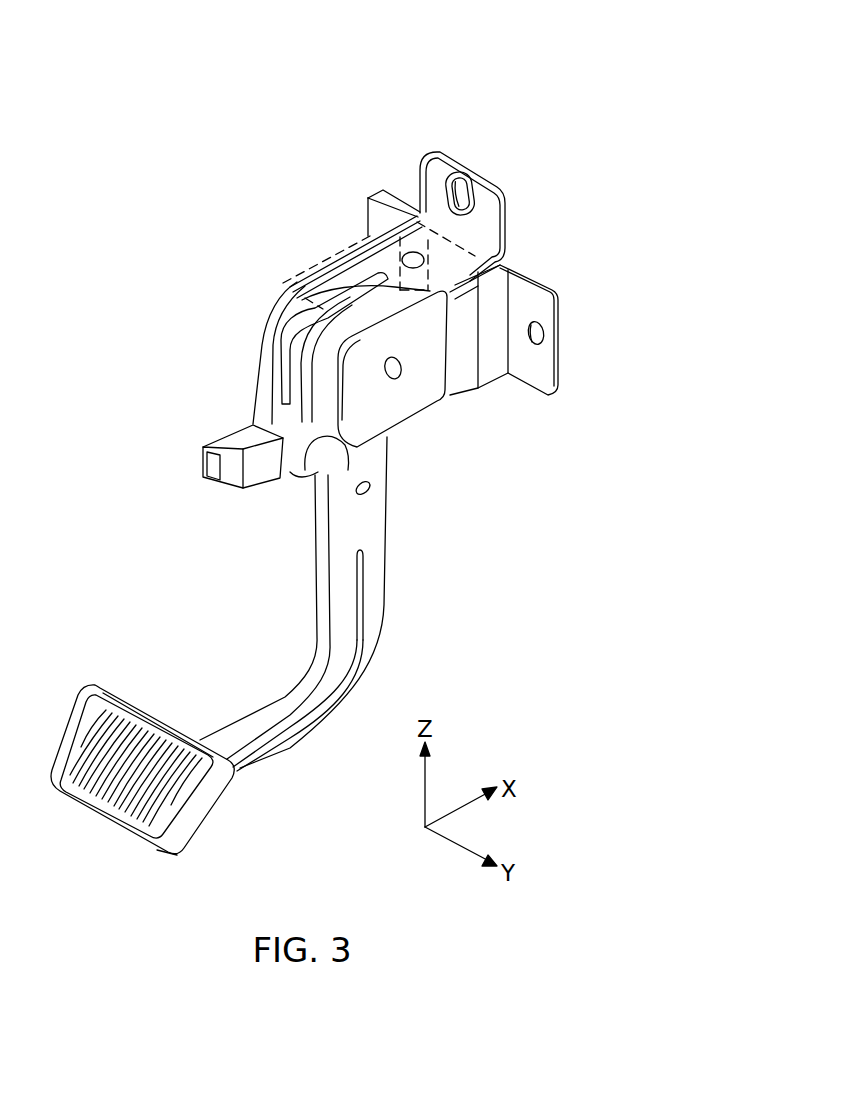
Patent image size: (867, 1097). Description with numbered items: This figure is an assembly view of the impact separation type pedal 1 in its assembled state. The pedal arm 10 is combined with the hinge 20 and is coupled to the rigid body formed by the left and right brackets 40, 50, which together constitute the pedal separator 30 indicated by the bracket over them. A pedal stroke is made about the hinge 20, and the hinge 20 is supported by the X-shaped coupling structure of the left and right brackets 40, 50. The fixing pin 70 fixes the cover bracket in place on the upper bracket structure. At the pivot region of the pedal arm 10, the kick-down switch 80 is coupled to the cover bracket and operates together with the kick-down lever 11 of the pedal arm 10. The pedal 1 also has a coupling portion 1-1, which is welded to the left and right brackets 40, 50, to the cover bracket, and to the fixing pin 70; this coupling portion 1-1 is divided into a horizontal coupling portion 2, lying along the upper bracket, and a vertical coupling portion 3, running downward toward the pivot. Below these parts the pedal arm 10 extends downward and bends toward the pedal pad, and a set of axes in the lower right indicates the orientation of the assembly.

The pedal 1 is at (229, 204).
The coupling portion 1-1 is at (242, 334).
The horizontal coupling portion 2 is at (327, 260).
The vertical coupling portion 3 is at (300, 298).
The pedal arm 10 is at (370, 623).
The kick-down lever 11 is at (318, 470).
The hinge 20 is at (397, 375).
The pedal separator 30 is at (442, 50).
The left bracket 40 is at (385, 195).
The right bracket 50 is at (526, 297).
The fixing pin 70 is at (412, 253).
The kick-down switch 80 is at (207, 462).